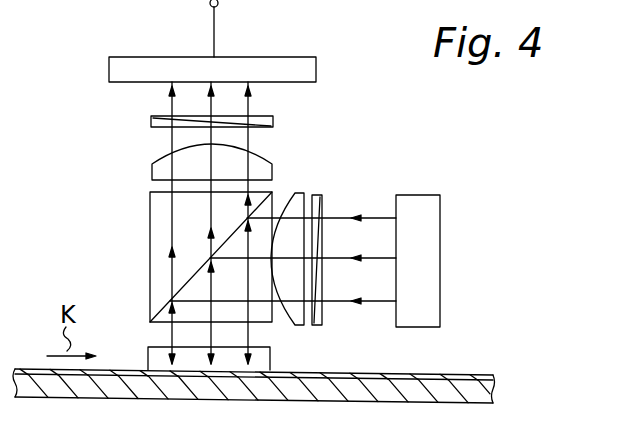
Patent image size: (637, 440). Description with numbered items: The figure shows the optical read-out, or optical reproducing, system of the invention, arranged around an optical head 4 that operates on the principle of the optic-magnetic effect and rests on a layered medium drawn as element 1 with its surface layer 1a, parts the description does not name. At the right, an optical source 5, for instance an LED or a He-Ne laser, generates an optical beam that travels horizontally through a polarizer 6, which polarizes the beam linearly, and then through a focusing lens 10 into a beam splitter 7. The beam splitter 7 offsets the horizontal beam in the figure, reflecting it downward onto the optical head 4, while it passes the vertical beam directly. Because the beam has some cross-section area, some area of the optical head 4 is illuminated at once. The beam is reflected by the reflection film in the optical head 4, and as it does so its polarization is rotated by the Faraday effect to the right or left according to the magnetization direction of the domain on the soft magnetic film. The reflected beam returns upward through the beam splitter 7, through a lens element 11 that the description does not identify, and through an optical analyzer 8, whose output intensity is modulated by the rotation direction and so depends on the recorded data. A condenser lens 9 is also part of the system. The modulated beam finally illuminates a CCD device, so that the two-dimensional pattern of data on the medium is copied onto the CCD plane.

The substrate 1 is at (472, 396).
The surface layer of substrate 1a is at (470, 378).
The optical head 4 is at (283, 363).
The optical source 5 is at (440, 258).
The polarizer 6 is at (318, 195).
The beam splitter 7 is at (157, 238).
The optical analyzer 8 is at (273, 122).
The condenser lens 9 is at (308, 72).
The focusing lens 10 is at (297, 195).
The imaging lens 11 is at (157, 173).